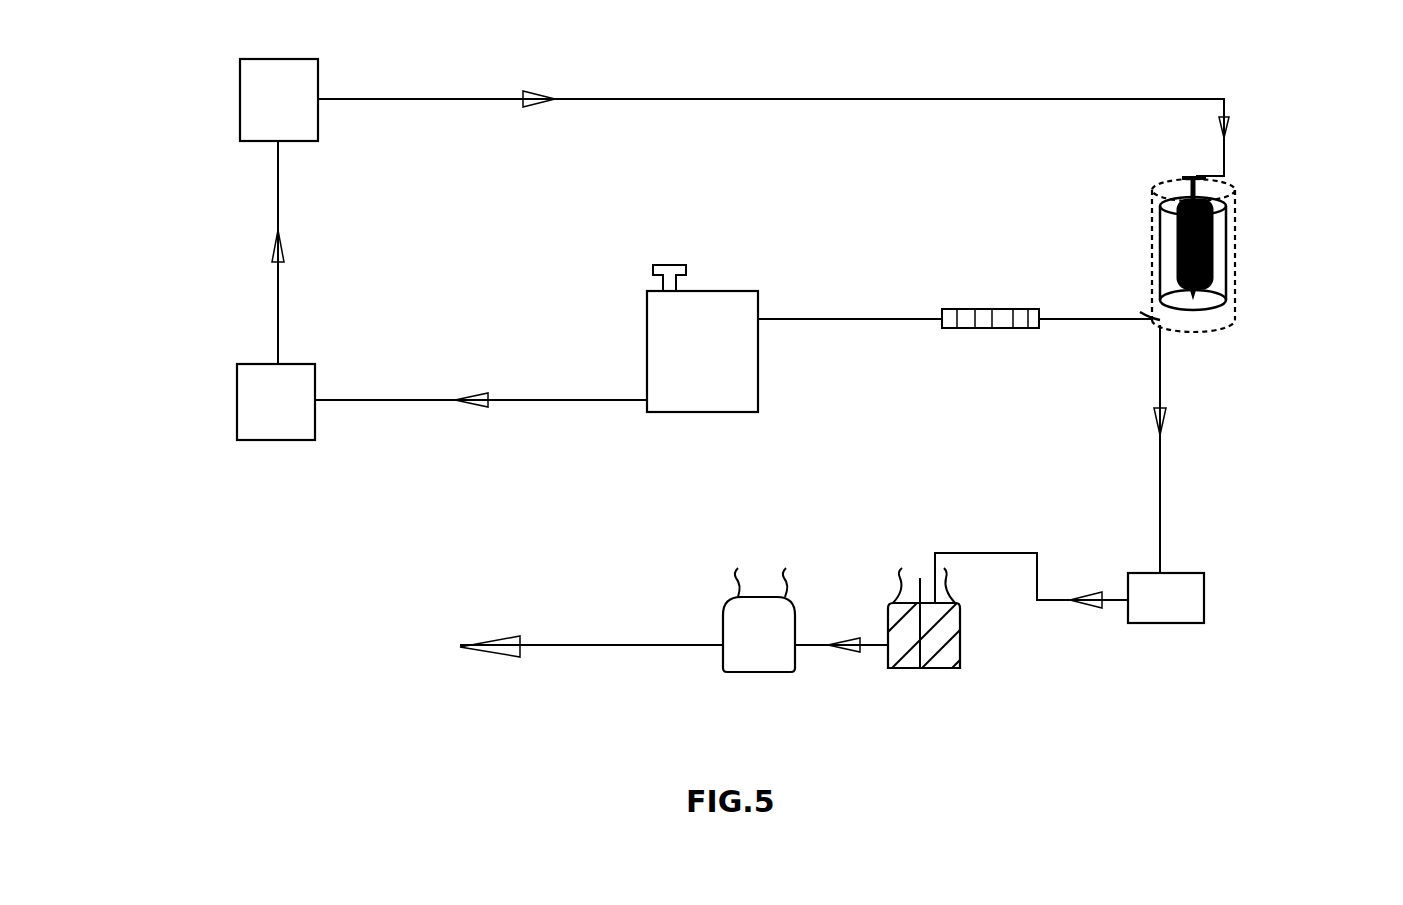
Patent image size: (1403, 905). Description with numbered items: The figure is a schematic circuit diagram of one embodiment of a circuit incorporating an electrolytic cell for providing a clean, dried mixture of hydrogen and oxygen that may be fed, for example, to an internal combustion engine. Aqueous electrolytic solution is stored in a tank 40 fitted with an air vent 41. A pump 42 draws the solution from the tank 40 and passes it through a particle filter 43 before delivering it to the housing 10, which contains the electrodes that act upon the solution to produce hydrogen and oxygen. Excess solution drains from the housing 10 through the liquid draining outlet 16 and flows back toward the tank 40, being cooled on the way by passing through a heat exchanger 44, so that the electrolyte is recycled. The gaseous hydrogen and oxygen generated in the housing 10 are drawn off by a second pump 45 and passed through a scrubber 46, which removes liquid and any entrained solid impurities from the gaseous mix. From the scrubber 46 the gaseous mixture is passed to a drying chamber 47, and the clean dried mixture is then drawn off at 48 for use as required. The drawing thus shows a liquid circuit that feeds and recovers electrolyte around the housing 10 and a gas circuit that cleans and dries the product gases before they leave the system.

The housing 10 is at (1251, 254).
The liquid draining outlet 16 is at (1147, 312).
The tank 40 is at (752, 370).
The air vent 41 is at (631, 248).
The pump 42 is at (250, 490).
The particle filter 43 is at (212, 151).
The heat exchanger 44 is at (990, 275).
The pump 45 is at (1198, 598).
The scrubber 46 is at (965, 648).
The drying chamber 47 is at (745, 605).
The draw-off point 48 is at (608, 648).